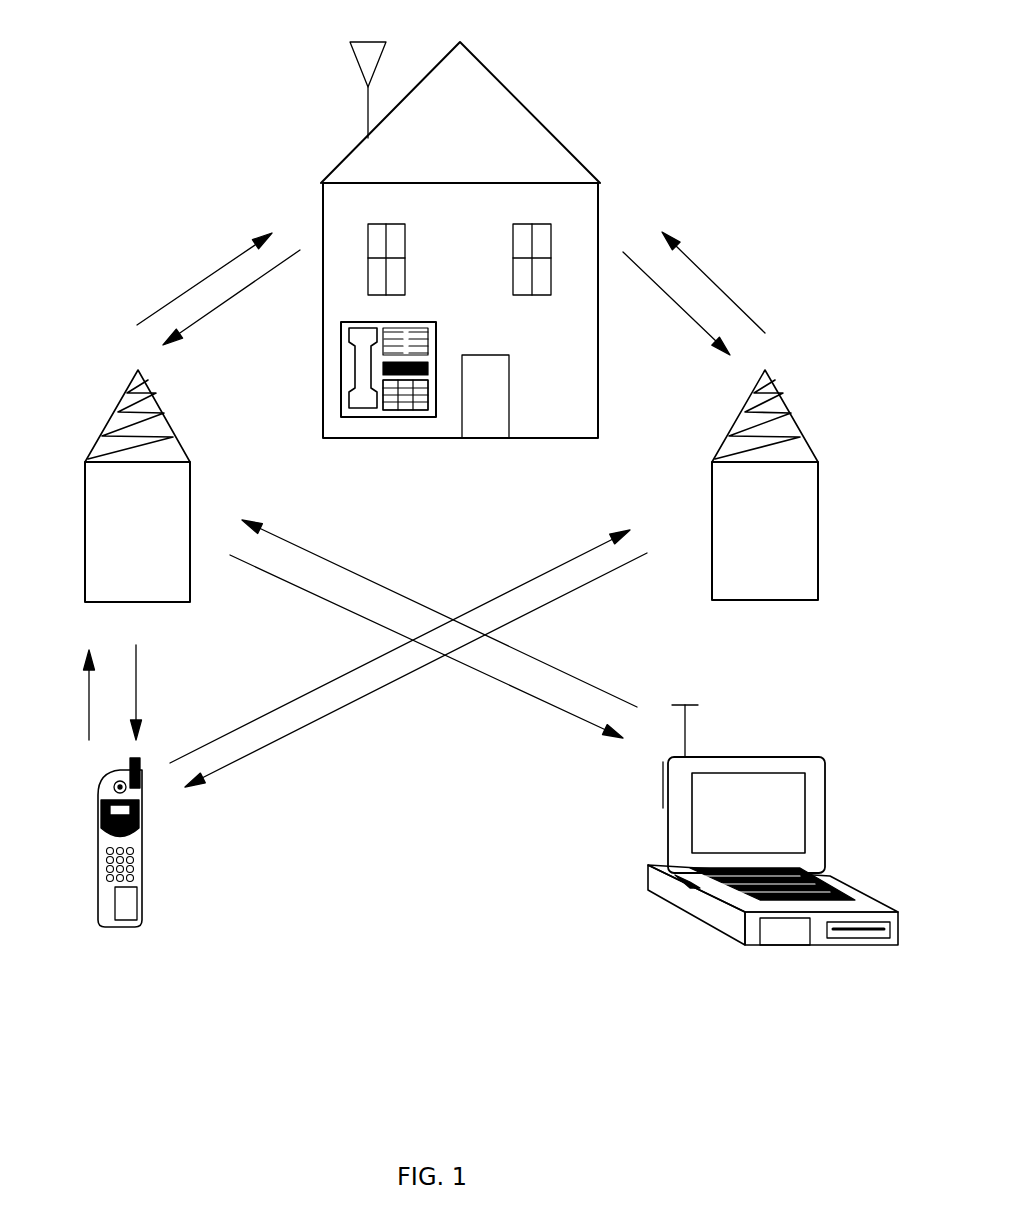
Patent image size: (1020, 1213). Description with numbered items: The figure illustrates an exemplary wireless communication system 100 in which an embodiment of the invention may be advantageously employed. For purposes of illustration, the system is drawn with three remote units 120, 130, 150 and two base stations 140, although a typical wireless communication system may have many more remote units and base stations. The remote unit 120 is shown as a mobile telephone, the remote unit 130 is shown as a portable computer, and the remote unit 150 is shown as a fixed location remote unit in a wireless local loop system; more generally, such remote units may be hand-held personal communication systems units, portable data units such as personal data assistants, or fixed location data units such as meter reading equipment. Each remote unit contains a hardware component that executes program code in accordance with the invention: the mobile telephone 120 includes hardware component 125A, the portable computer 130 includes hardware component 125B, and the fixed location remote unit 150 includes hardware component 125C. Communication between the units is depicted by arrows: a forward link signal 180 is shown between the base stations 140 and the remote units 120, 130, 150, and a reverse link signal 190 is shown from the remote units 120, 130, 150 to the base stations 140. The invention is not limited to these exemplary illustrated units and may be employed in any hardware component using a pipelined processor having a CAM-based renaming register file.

The wireless communication system 100 is at (138, 80).
The remote unit 120 is at (98, 833).
The hardware component 125A is at (127, 905).
The hardware component 125B is at (402, 413).
The hardware component 125C is at (788, 930).
The remote unit 130 is at (788, 766).
The base station 140 is at (122, 410).
The remote unit 150 is at (341, 389).
The forward link signal 180 is at (213, 272).
The reverse link signal 190 is at (237, 300).